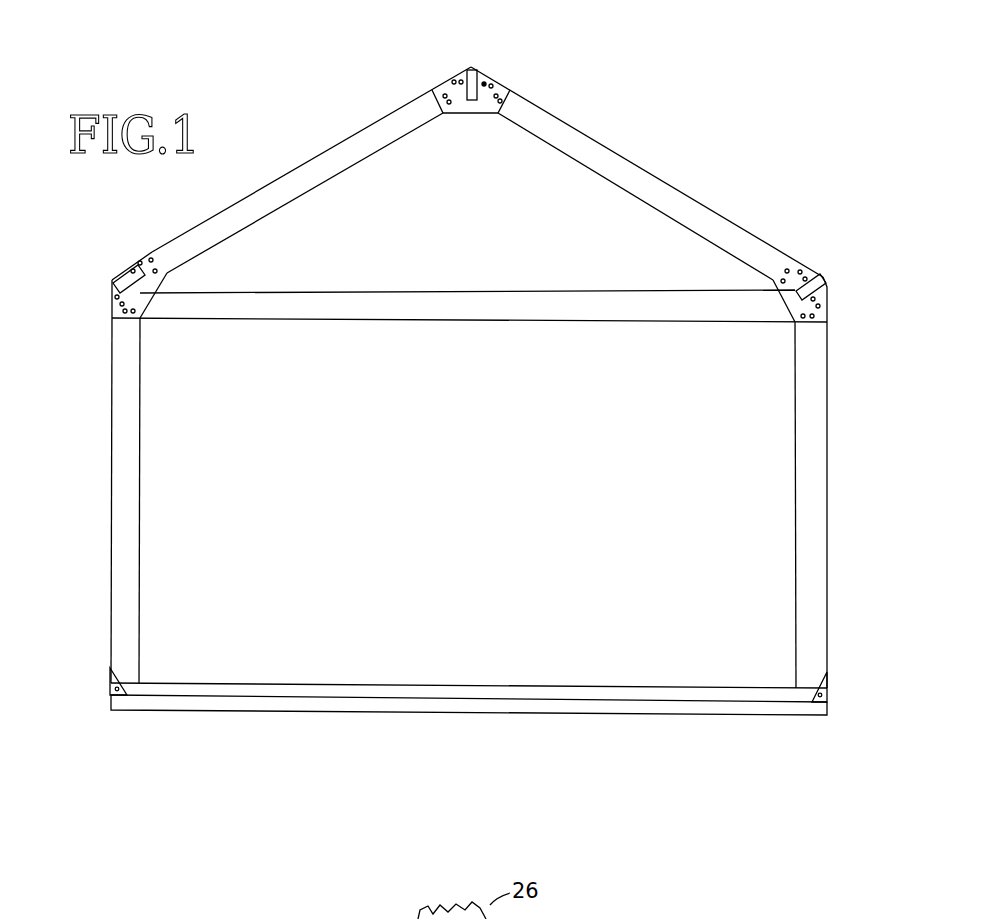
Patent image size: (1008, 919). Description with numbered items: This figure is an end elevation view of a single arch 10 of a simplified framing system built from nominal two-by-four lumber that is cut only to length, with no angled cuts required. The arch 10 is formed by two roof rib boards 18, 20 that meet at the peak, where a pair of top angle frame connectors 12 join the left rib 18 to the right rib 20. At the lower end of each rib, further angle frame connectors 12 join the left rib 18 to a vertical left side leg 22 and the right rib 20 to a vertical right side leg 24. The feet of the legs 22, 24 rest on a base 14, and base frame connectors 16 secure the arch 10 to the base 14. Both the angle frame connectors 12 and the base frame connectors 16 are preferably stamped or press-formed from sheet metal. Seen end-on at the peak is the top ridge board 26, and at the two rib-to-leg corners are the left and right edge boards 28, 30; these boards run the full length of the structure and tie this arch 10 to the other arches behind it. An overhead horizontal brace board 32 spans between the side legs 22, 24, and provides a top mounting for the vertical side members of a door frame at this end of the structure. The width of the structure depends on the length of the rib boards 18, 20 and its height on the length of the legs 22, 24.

The arch 10 is at (690, 145).
The angle frame connector 12 is at (497, 88).
The base 14 is at (478, 686).
The base frame connector 16 is at (110, 688).
The left roof rib board 18 is at (336, 177).
The right roof rib board 20 is at (610, 182).
The left side leg 22 is at (139, 515).
The right side leg 24 is at (795, 470).
The top ridge board 26 is at (468, 70).
The left edge board 28 is at (115, 275).
The right edge board 30 is at (822, 278).
The overhead horizontal brace board 32 is at (497, 322).